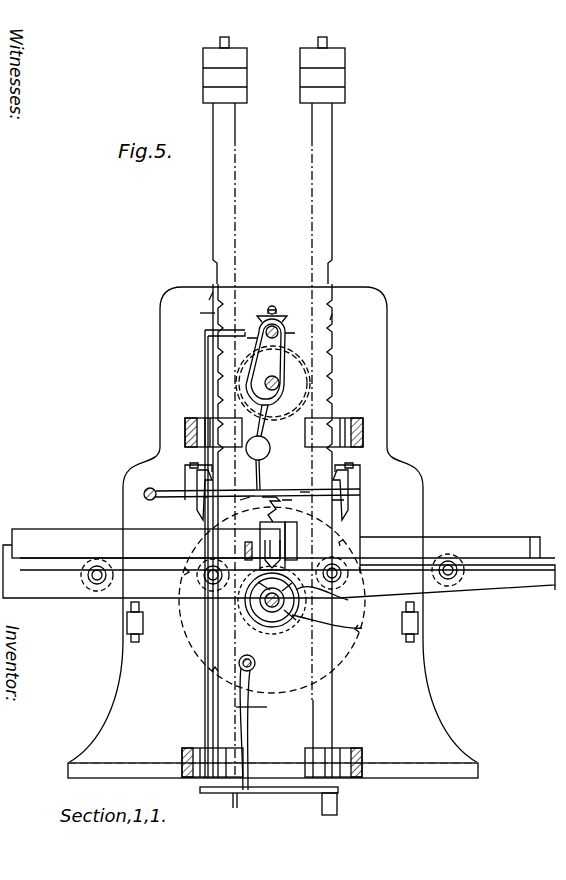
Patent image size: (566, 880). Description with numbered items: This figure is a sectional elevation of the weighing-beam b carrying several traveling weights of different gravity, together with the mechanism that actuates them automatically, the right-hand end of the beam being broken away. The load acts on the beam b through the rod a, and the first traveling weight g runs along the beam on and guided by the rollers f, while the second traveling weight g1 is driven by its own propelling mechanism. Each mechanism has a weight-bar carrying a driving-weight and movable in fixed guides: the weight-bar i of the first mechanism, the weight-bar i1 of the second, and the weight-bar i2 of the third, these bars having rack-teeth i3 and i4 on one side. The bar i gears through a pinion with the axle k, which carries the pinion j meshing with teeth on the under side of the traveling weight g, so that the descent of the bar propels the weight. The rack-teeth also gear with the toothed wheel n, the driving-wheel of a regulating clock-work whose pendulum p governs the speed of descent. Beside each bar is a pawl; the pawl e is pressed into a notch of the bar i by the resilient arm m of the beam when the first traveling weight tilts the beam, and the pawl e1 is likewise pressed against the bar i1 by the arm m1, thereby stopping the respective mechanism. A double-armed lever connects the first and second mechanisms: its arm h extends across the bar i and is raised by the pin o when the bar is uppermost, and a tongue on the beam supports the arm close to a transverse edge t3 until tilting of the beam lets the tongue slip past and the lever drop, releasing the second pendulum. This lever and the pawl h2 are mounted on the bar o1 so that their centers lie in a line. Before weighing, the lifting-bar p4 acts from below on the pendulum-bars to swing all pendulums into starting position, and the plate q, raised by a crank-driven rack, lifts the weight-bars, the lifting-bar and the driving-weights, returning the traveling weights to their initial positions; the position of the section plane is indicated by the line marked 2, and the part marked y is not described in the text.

The pawl e1 is at (232, 70).
The pin o is at (318, 279).
The weight-bar i1 is at (229, 440).
The weight-bar i2 is at (206, 294).
The weight-bar i is at (324, 440).
The rack-teeth i4 is at (194, 313).
The rack-teeth i3 is at (337, 313).
The lifting-bar p4 is at (217, 554).
The toothed wheel n is at (273, 363).
The pendulum p is at (264, 447).
The bar o1 is at (252, 488).
The pawl h2 is at (246, 489).
The lever arm h is at (302, 485).
The transverse edge t3 is at (278, 524).
The arm m1 is at (191, 489).
The arm m is at (356, 518).
The pawl e is at (340, 495).
The traveling weight g is at (100, 534).
The traveling weight g1 is at (450, 539).
The weighing-beam b is at (254, 621).
The axle k is at (560, 596).
The pinion j is at (272, 600).
The section plane 2 is at (277, 596).
The rollers f is at (324, 592).
The arm y is at (332, 625).
The rod a is at (259, 722).
The plate q is at (269, 801).